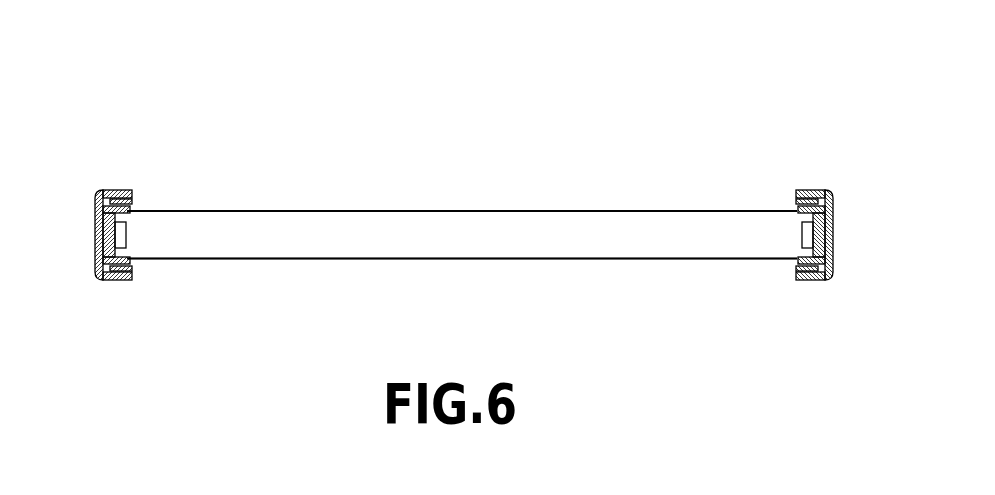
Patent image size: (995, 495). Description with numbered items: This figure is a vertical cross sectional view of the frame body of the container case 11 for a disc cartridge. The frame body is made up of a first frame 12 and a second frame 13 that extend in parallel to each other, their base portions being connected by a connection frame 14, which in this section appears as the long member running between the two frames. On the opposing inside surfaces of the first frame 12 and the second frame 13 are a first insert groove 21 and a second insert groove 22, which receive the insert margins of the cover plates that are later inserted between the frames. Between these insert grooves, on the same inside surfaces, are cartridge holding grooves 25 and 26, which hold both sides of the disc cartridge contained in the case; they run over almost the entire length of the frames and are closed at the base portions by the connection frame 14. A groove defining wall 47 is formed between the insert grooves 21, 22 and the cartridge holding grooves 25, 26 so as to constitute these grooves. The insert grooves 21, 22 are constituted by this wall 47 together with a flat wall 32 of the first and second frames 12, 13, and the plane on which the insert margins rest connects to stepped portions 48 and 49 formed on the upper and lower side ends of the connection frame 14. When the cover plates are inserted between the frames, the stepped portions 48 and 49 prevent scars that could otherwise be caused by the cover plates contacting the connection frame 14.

The container case 11 is at (615, 210).
The first frame 12 is at (833, 197).
The second frame 13 is at (97, 198).
The connection frame 14 is at (517, 227).
The first insert groove 21 is at (143, 198).
The second insert groove 22 is at (113, 279).
The cartridge holding groove 25 is at (793, 213).
The cartridge holding groove 26 is at (124, 252).
The flat wall 32 is at (126, 190).
The groove defining wall 47 is at (97, 222).
The stepped portion 48 is at (325, 210).
The stepped portion 49 is at (317, 259).